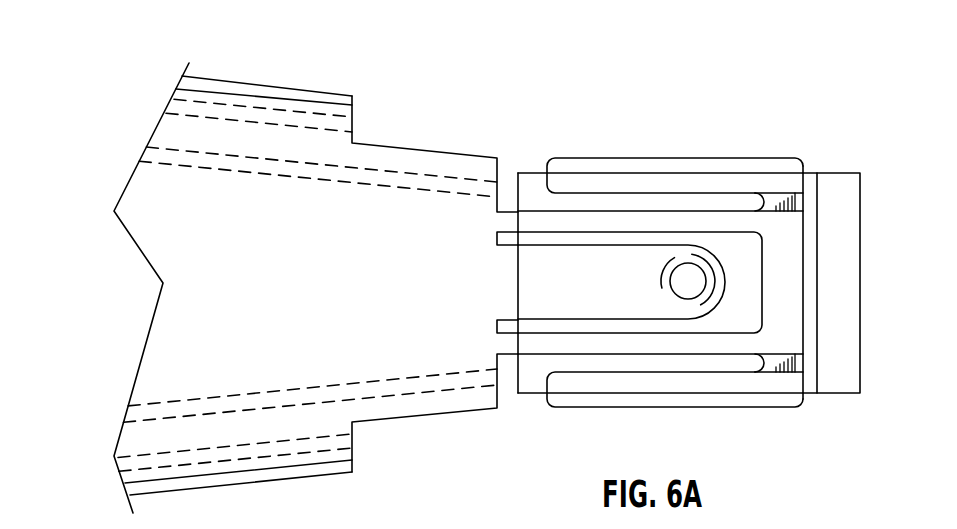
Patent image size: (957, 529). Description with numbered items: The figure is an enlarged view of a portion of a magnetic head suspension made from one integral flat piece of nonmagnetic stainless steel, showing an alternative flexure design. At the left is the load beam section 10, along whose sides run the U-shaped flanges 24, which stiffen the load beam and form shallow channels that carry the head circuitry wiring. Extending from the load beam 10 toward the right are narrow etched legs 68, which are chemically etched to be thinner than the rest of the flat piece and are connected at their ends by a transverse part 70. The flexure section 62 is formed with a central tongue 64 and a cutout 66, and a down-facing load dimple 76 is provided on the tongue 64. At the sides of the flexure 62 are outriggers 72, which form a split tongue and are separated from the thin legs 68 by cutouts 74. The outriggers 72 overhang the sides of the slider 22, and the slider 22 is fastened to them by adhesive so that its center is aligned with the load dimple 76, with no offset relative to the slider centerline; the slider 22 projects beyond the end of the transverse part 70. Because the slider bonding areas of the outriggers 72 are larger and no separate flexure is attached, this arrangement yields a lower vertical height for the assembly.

The load beam section 10 is at (410, 215).
The slider 22 is at (847, 298).
The U-shaped flanges 24 is at (353, 112).
The flexure section 62 is at (725, 157).
The tongue 64 is at (560, 293).
The cutout 66 is at (752, 246).
The narrow etched legs 68 is at (625, 220).
The transverse part 70 is at (793, 237).
The outriggers 72 is at (677, 180).
The cutouts 74 is at (660, 365).
The load dimple 76 is at (686, 284).